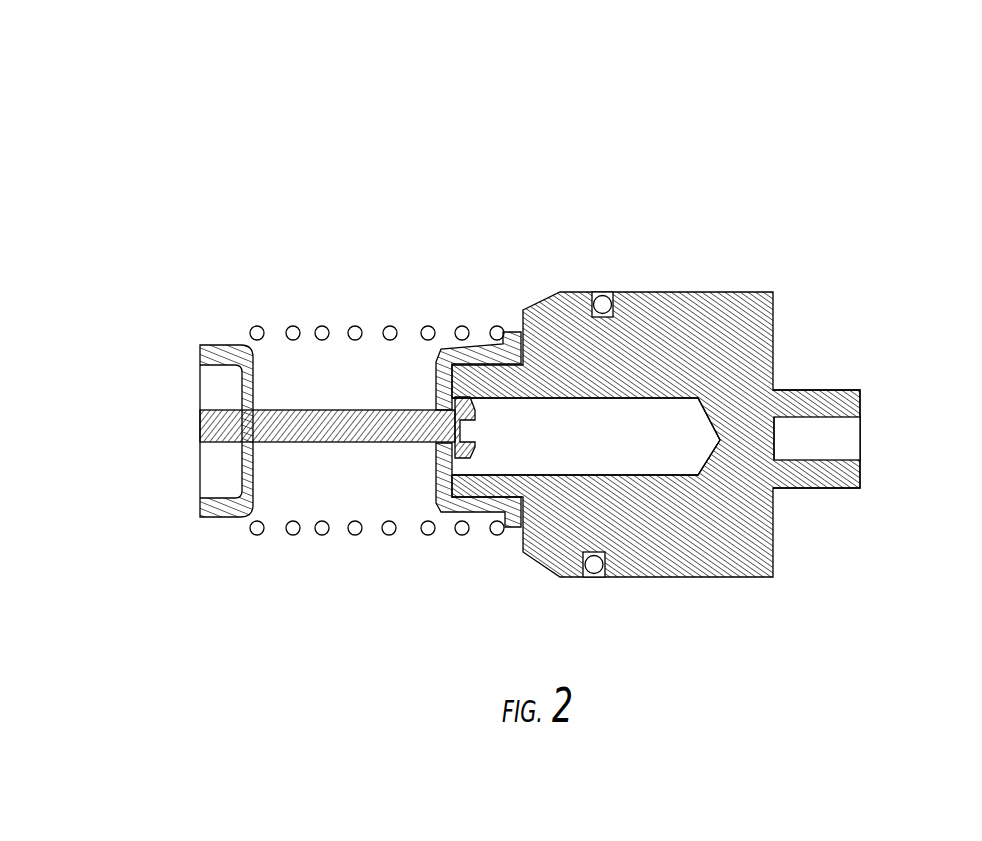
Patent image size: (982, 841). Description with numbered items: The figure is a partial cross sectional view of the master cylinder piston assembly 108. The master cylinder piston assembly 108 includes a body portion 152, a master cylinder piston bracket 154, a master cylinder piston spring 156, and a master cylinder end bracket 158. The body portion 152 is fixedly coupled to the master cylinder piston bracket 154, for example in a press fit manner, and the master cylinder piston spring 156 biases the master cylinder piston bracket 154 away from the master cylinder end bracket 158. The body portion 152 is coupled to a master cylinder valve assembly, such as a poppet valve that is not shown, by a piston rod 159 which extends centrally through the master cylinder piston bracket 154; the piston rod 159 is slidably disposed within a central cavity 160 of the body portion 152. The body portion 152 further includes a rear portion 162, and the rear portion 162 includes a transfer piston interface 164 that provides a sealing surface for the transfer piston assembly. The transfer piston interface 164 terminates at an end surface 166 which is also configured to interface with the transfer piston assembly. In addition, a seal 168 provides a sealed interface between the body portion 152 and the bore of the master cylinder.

The master cylinder piston assembly 108 is at (113, 118).
The body portion 152 is at (748, 293).
The master cylinder piston bracket 154 is at (514, 332).
The master cylinder piston spring 156 is at (356, 326).
The master cylinder end bracket 158 is at (215, 517).
The piston rod 159 is at (372, 445).
The central cavity 160 is at (592, 446).
The rear portion 162 is at (862, 402).
The transfer piston interface 164 is at (827, 418).
The end surface 166 is at (775, 438).
The seal 168 is at (604, 292).